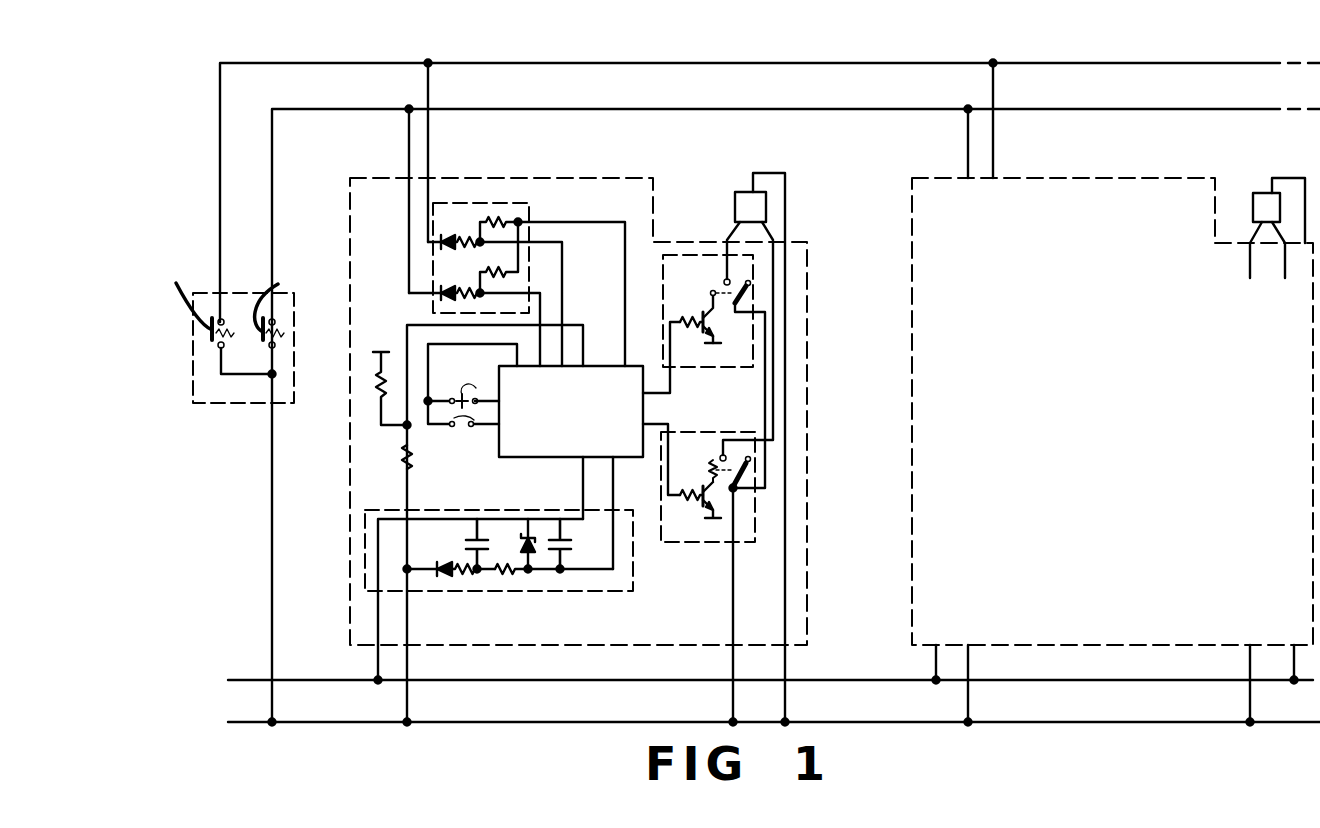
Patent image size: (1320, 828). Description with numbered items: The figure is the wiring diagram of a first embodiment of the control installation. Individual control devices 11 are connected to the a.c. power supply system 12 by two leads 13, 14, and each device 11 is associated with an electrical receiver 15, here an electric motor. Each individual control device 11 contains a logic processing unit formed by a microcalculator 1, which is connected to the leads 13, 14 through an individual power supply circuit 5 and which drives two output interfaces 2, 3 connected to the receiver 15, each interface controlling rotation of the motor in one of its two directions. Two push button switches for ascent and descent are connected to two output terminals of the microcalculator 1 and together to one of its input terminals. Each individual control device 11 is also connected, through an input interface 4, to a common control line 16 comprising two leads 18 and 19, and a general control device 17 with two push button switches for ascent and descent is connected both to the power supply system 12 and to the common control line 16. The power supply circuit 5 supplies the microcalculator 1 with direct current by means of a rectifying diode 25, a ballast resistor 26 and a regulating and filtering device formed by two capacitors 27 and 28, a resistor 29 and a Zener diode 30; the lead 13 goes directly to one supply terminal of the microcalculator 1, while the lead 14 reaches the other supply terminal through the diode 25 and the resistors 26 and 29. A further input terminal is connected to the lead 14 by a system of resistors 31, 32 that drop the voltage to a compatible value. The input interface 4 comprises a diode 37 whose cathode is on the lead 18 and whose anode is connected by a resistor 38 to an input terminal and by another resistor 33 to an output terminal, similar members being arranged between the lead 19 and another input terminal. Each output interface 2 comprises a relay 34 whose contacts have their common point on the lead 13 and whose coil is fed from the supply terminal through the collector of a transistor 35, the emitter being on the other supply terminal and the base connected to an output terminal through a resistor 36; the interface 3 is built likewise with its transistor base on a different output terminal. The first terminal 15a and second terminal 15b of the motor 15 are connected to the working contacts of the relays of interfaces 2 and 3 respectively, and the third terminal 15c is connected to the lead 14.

The microcalculator 1 is at (510, 457).
The output interface 2 is at (706, 371).
The output interface 3 is at (700, 542).
The input interface 4 is at (517, 278).
The individual power supply circuit 5 is at (501, 597).
The individual control device 11 is at (560, 178).
The a.c. power supply system 12 is at (748, 703).
The lead 13 is at (320, 677).
The lead 14 is at (318, 724).
The electrical receiver 15 is at (996, 433).
The first terminal 15a is at (730, 238).
The second terminal 15b is at (780, 238).
The third terminal 15c is at (770, 174).
The common control line 16 is at (770, 391).
The general control device 17 is at (213, 403).
The lead 18 is at (350, 136).
The lead 19 is at (300, 63).
The rectifying diode 25 is at (442, 578).
The ballast resistor 26 is at (462, 575).
The capacitor 27 is at (466, 545).
The capacitor 28 is at (571, 546).
The resistor 29 is at (505, 575).
The Zener diode 30 is at (535, 548).
The resistor 31 is at (404, 452).
The resistor 32 is at (372, 390).
The resistor 33 is at (497, 221).
The relay 34 is at (711, 296).
The transistor 35 is at (722, 324).
The resistor 36 is at (683, 324).
The diode 37 is at (454, 222).
The resistor 38 is at (467, 238).